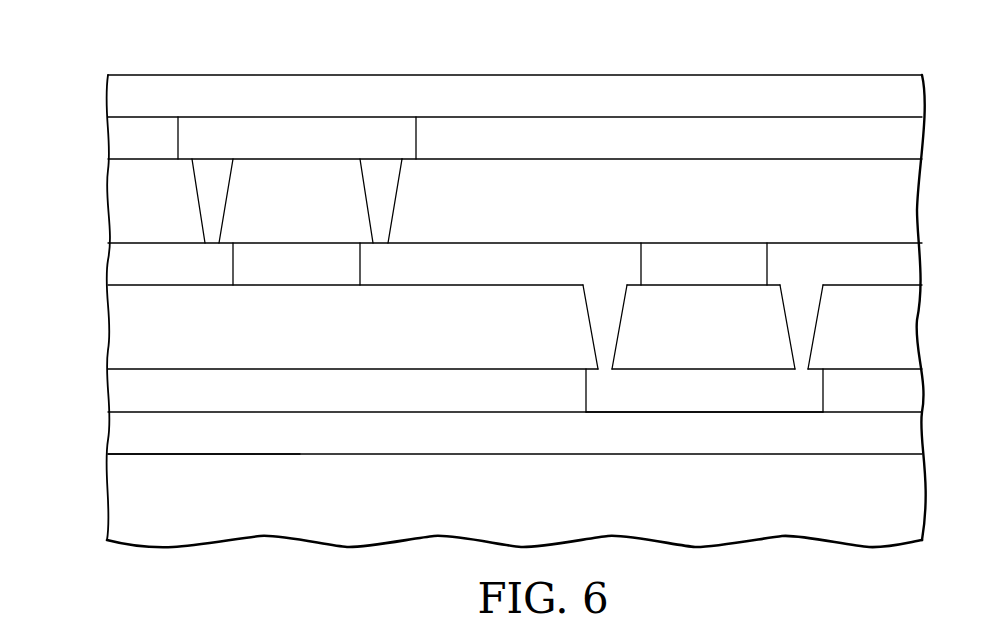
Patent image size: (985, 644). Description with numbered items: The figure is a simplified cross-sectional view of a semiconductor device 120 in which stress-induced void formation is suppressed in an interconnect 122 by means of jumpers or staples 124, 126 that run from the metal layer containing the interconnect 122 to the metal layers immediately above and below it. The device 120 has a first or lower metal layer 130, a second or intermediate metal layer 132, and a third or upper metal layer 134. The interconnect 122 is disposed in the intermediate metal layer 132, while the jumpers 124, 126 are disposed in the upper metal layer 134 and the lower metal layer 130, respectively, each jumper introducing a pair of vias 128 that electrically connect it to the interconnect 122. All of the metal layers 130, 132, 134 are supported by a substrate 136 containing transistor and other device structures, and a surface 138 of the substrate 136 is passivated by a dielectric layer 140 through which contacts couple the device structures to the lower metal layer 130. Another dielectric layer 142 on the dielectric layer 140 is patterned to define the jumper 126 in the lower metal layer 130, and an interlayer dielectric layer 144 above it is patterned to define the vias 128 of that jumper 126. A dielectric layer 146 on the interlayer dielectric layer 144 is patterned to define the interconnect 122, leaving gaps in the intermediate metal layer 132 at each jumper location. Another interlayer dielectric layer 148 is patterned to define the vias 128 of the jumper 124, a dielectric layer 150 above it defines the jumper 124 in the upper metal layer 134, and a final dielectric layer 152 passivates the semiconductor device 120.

The semiconductor device 120 is at (862, 50).
The interconnect 122 is at (128, 243).
The jumper 124 is at (342, 116).
The jumper 126 is at (647, 406).
The vias 128 is at (206, 199).
The first metal layer 130 is at (689, 406).
The second metal layer 132 is at (148, 278).
The third metal layer 134 is at (282, 154).
The substrate 136 is at (345, 512).
The surface 138 is at (137, 453).
The dielectric layer 140 is at (345, 449).
The dielectric layer 142 is at (345, 406).
The interlayer dielectric layer 144 is at (345, 342).
The dielectric layer 146 is at (282, 278).
The interlayer dielectric layer 148 is at (569, 218).
The dielectric layer 150 is at (617, 154).
The dielectric layer 152 is at (617, 111).